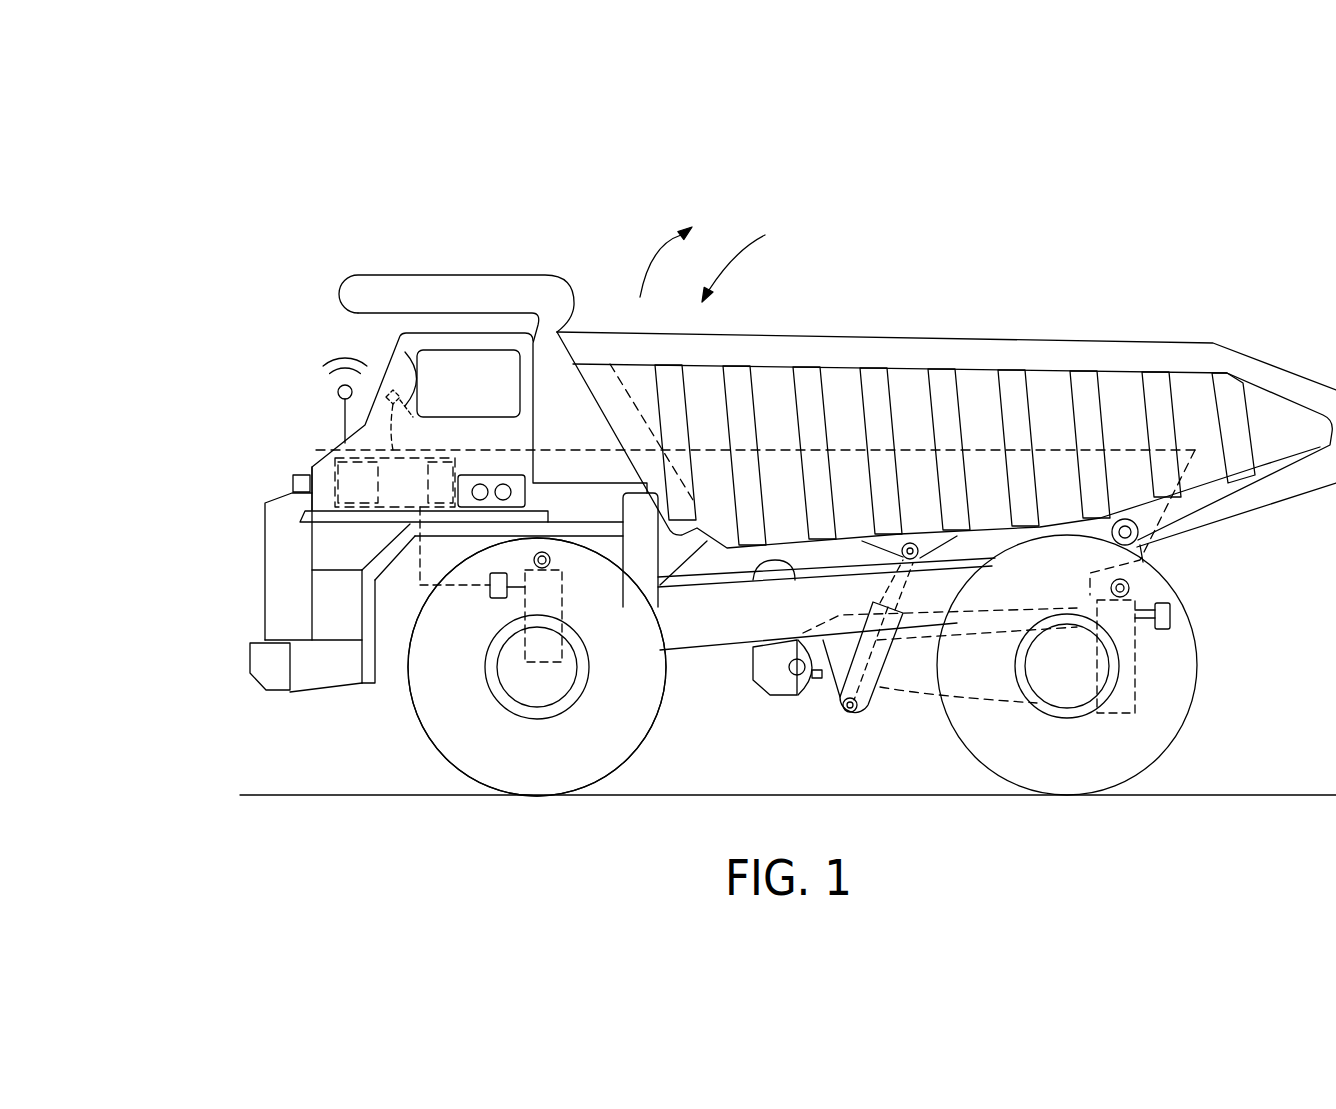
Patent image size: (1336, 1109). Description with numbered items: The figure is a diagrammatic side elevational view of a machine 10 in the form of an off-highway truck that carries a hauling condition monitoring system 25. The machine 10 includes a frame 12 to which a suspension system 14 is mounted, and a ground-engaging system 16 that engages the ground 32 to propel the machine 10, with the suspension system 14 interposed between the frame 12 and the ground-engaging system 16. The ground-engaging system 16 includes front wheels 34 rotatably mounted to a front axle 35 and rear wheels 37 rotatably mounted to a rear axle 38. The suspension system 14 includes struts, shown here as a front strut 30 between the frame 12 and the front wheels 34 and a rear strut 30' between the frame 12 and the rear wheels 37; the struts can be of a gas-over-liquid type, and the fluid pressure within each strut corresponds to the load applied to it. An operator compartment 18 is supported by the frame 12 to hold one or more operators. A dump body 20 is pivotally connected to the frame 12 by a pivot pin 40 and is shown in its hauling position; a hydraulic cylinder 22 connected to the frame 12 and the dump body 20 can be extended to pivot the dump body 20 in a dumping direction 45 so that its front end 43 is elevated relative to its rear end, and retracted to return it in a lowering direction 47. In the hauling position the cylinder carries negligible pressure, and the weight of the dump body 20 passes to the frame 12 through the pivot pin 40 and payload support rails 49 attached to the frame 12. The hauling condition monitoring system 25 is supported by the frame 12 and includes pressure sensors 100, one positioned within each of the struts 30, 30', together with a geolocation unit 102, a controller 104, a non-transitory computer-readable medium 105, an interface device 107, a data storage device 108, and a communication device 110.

The machine 10 is at (326, 142).
The frame 12 is at (712, 618).
The suspension system 14 is at (964, 710).
The ground-engaging system 16 is at (620, 801).
The operator compartment 18 is at (413, 342).
The dump body 20 is at (827, 333).
The hydraulic cylinder 22 is at (779, 650).
The hauling condition monitoring system 25 is at (313, 438).
The front strut 30 is at (452, 645).
The rear strut 30' is at (1191, 646).
The ground 32 is at (1247, 780).
The front wheels 34 is at (450, 740).
The front axle 35 is at (535, 682).
The rear wheels 37 is at (1107, 755).
The rear axle 38 is at (1058, 673).
The pivot pin 40 is at (1138, 537).
The front end 43 is at (603, 362).
The dumping direction 45 is at (650, 262).
The lowering direction 47 is at (733, 257).
The payload support rails 49 is at (752, 582).
The pressure sensors 100 is at (490, 592).
The geolocation unit 102 is at (337, 402).
The controller 104 is at (430, 480).
The non-transitory computer-readable medium 105 is at (425, 490).
The interface device 107 is at (410, 400).
The data storage device 108 is at (292, 498).
The communication device 110 is at (295, 473).